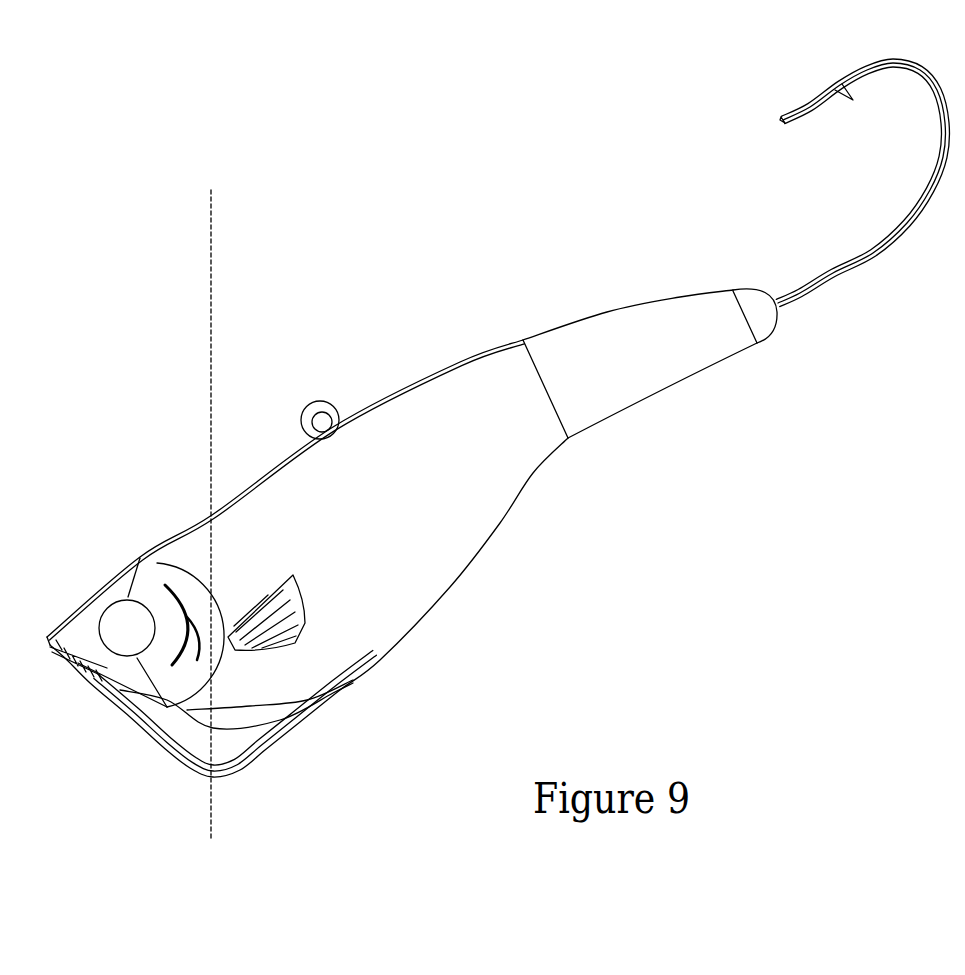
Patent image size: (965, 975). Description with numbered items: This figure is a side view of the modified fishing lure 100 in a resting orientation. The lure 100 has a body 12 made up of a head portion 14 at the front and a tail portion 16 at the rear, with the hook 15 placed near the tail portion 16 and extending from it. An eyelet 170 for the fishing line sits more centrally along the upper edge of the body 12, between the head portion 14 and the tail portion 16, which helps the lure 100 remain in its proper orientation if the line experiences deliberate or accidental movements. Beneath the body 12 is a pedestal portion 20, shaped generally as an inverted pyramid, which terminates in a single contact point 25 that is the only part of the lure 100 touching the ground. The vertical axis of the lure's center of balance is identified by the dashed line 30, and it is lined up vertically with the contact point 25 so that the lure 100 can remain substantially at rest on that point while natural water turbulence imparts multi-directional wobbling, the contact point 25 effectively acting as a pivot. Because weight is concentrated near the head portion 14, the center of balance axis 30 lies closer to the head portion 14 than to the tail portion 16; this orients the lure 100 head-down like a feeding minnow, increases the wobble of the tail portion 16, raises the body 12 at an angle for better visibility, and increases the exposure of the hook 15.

The lure 100 is at (290, 205).
The body 12 is at (439, 567).
The head portion 14 is at (138, 547).
The hook 15 is at (923, 153).
The tail portion 16 is at (604, 304).
The pedestal portion 20 is at (260, 725).
The contact point 25 is at (230, 775).
The vertical axis of center of balance 30 is at (211, 287).
The eyelet 170 is at (330, 402).